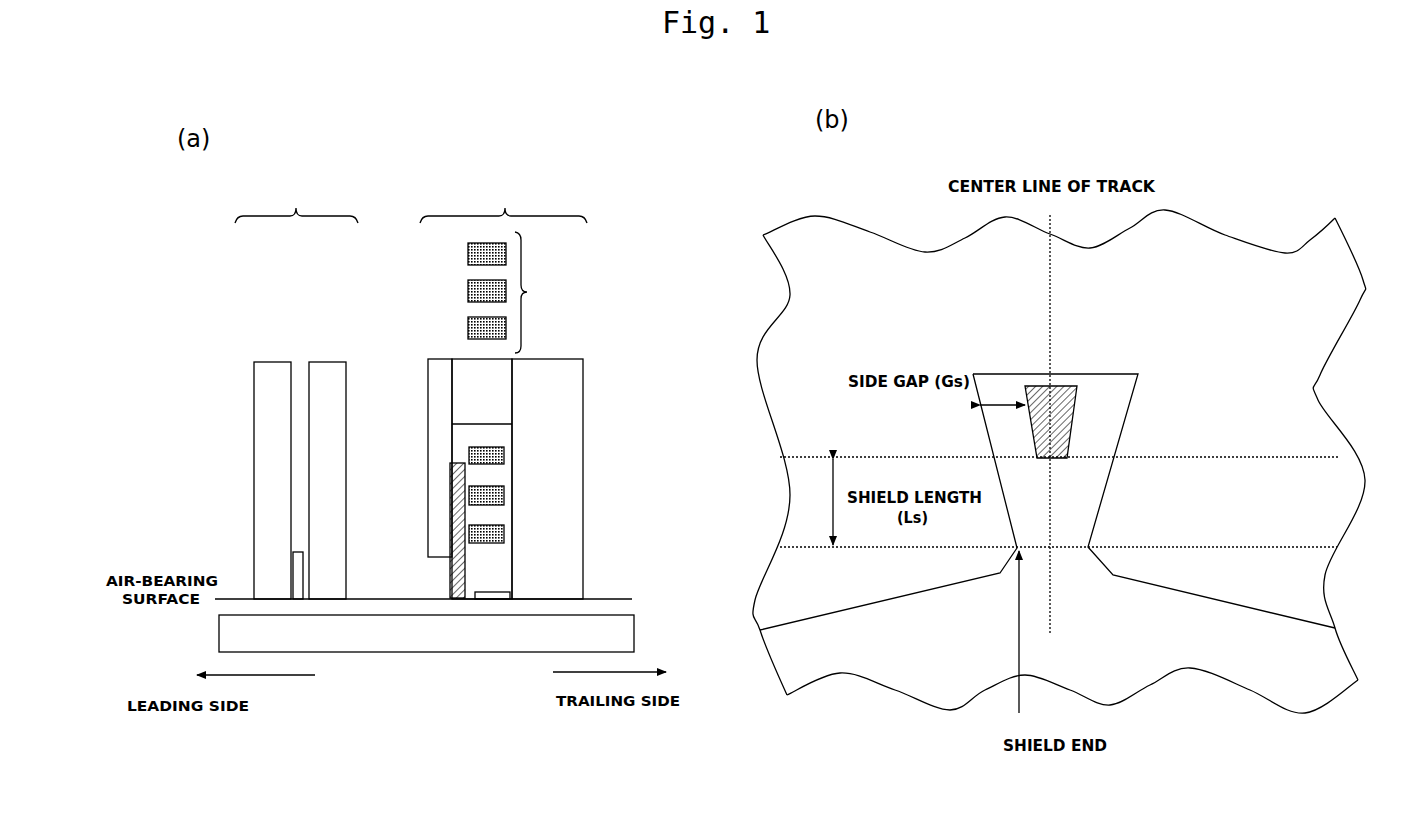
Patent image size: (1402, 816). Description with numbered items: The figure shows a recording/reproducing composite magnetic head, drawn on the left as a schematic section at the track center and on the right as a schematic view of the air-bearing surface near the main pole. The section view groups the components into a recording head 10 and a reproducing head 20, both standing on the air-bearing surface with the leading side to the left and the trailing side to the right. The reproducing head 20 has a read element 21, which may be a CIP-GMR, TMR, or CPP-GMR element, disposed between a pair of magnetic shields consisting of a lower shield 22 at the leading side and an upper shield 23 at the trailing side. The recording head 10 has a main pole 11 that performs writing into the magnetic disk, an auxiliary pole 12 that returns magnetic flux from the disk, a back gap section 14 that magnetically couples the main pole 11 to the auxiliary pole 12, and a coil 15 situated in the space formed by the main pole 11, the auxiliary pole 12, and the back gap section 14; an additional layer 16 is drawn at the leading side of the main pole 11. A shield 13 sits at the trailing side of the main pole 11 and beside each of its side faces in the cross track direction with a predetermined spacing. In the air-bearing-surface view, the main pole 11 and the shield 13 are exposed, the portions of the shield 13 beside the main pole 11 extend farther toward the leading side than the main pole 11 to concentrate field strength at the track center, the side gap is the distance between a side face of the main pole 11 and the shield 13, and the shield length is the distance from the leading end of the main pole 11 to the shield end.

The recording head 10 is at (503, 196).
The main pole 11 is at (450, 583).
The auxiliary pole 12 is at (572, 366).
The shield 13 is at (491, 600).
The back gap section 14 is at (468, 364).
The coil 15 is at (517, 387).
The leading shield 16 is at (434, 420).
The reproducing head 20 is at (296, 196).
The read element 21 is at (295, 553).
The lower shield 22 is at (254, 380).
The upper shield 23 is at (326, 362).